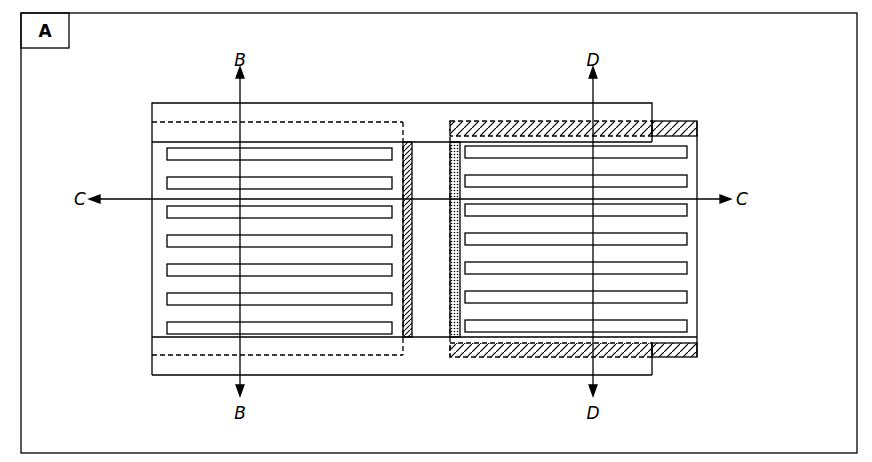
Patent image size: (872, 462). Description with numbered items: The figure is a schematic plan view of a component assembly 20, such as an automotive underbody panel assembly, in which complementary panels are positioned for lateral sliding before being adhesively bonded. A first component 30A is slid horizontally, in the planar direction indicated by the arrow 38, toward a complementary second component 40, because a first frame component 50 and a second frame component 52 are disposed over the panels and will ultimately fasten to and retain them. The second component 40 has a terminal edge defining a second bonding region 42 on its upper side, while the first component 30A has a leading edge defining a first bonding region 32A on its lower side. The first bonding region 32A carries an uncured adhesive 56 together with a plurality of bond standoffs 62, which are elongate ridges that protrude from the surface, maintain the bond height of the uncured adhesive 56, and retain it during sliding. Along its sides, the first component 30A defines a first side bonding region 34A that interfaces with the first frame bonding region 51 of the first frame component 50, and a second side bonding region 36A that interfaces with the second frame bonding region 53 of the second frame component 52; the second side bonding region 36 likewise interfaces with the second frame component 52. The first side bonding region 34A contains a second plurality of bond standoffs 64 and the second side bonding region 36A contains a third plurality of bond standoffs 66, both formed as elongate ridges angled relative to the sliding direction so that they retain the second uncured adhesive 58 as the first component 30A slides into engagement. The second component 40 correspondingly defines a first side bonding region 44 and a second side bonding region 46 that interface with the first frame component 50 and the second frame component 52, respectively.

The component assembly 20 is at (140, 80).
The first frame bonding region 51 is at (181, 113).
The first side bonding region 44 is at (313, 133).
The first frame component 50 is at (365, 103).
The second bonding region 42 is at (408, 142).
The first bonding region 32A is at (457, 142).
The first side bonding region 34A is at (497, 123).
The second plurality of bond standoffs 64 is at (570, 127).
The second uncured adhesive 58 is at (638, 125).
The first component 30A is at (695, 167).
The second component 40 is at (160, 178).
The arrow 38 is at (430, 239).
The second frame bonding region 53 is at (191, 365).
The second side bonding region 46 is at (347, 347).
The second frame component 52 is at (378, 375).
The bond standoffs 62 is at (458, 342).
The uncured adhesive 56 is at (447, 342).
The second side bonding region 36 is at (523, 357).
The third plurality of bond standoffs 66 is at (627, 357).
The second side bonding region 36A is at (672, 358).